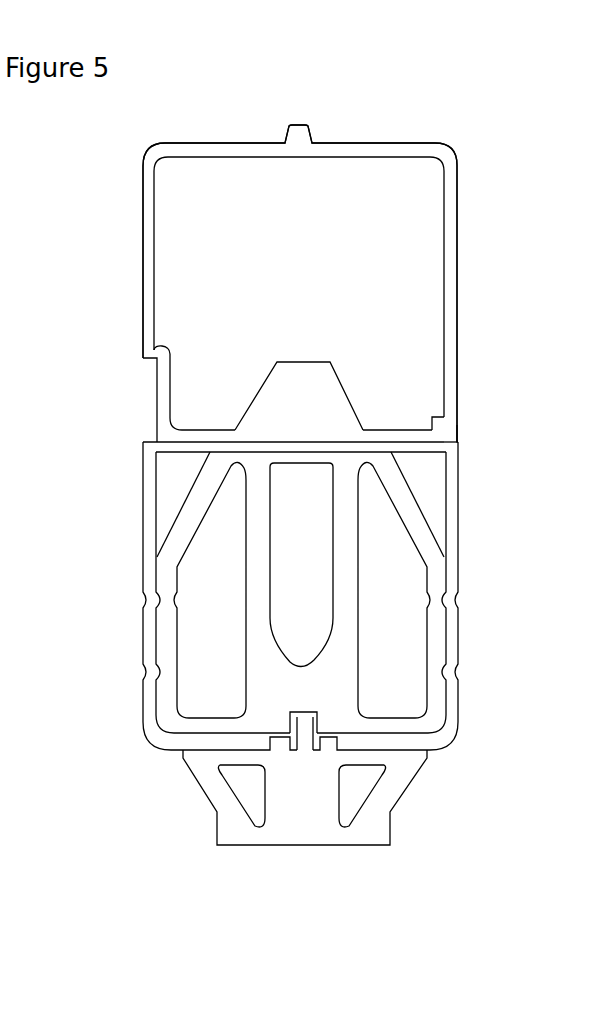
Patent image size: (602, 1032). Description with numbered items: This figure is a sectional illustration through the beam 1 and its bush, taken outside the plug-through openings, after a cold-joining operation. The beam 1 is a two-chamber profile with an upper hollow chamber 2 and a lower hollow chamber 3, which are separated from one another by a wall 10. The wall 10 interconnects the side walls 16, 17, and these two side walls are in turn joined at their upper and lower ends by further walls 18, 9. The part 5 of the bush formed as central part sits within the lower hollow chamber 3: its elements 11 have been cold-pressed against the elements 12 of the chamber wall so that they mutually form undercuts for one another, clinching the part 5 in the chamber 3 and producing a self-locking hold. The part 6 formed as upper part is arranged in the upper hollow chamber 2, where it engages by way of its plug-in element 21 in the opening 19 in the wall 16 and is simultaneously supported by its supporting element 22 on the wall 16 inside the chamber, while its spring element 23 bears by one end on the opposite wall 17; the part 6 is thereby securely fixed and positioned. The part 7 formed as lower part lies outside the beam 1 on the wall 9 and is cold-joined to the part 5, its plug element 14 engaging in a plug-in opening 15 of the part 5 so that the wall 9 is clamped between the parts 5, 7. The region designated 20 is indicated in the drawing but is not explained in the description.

The beam 1 is at (478, 97).
The upper hollow chamber 2 is at (393, 282).
The lower hollow chamber 3 is at (170, 483).
The part formed as central part 5 is at (267, 680).
The part formed as upper part 6 is at (268, 410).
The part formed as lower part 7 is at (218, 812).
The wall 9 is at (193, 740).
The wall 10 is at (200, 448).
The elements of the part 5 11 is at (162, 600).
The elements of the hollow chamber 3 12 is at (143, 600).
The plug element 14 is at (303, 730).
The plug-in opening 15 is at (305, 710).
The wall 16 is at (455, 195).
The wall 17 is at (143, 190).
The wall 18 is at (250, 148).
The opening 19 is at (462, 427).
The left hook portion 20 is at (145, 395).
The plug-in element 21 is at (452, 430).
The supporting element 22 is at (446, 415).
The spring element 23 is at (170, 393).